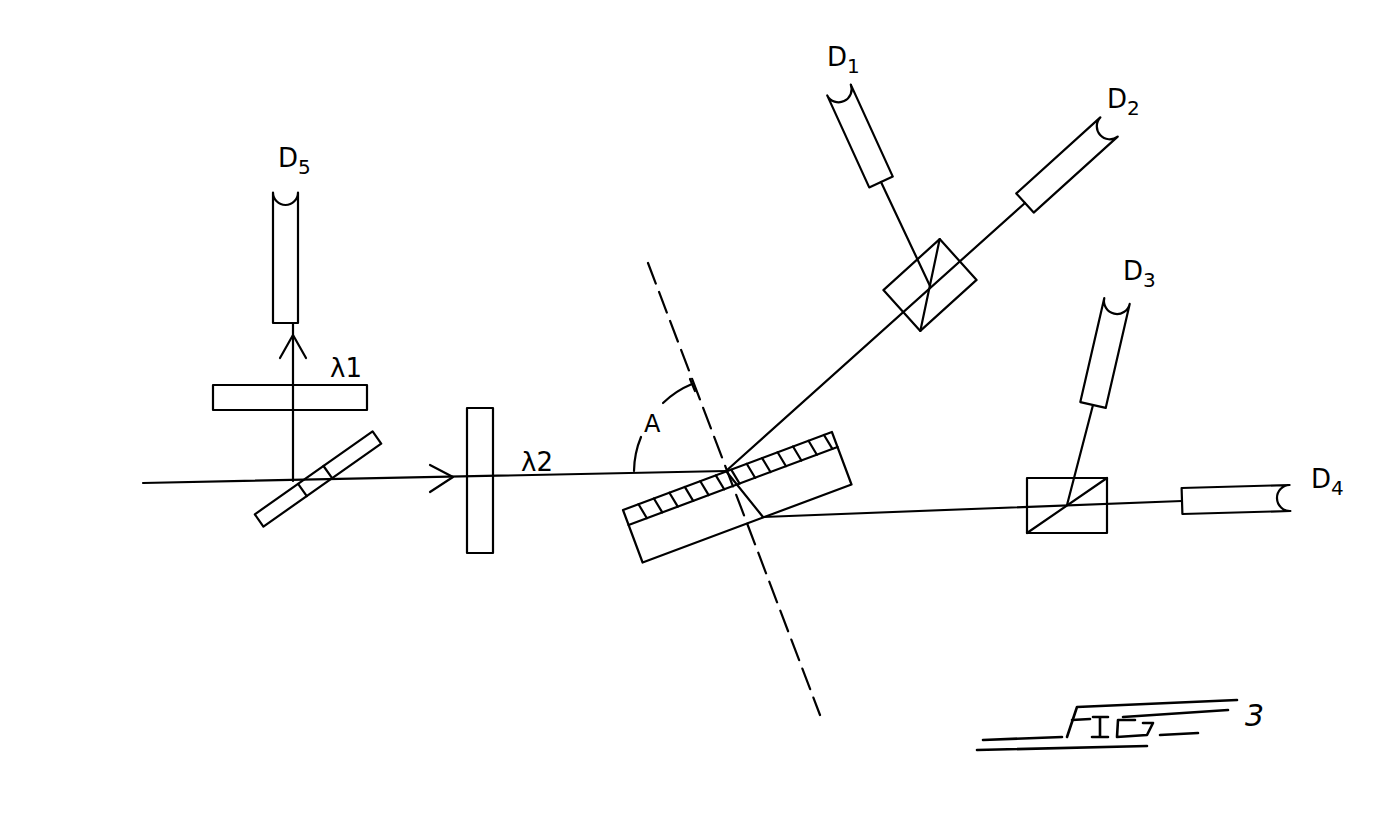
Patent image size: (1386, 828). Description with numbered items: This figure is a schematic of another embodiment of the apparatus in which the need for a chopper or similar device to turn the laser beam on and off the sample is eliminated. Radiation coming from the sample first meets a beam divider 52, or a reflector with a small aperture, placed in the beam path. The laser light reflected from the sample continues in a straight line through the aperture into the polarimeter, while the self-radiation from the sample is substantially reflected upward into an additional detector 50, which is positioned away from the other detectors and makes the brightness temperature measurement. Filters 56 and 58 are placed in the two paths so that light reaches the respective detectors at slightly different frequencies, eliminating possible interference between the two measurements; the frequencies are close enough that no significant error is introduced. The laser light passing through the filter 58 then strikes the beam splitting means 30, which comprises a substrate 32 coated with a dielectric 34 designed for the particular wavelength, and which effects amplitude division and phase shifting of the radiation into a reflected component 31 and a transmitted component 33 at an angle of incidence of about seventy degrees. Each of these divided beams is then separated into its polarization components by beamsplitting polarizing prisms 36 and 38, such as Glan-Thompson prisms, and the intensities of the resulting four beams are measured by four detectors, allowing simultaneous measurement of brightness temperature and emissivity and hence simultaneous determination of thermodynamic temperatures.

The beam splitting means 30 is at (707, 519).
The reflected component 31 is at (840, 366).
The substrate 32 is at (700, 528).
The transmitted component 33 is at (950, 512).
The dielectric 34 is at (653, 496).
The beamsplitting polarizing prism 36 is at (934, 320).
The beamsplitting polarizing prism 38 is at (1077, 533).
The additional detector 50 is at (298, 278).
The beam divider 52 is at (259, 517).
The filter 56 is at (230, 385).
The filter 58 is at (493, 418).